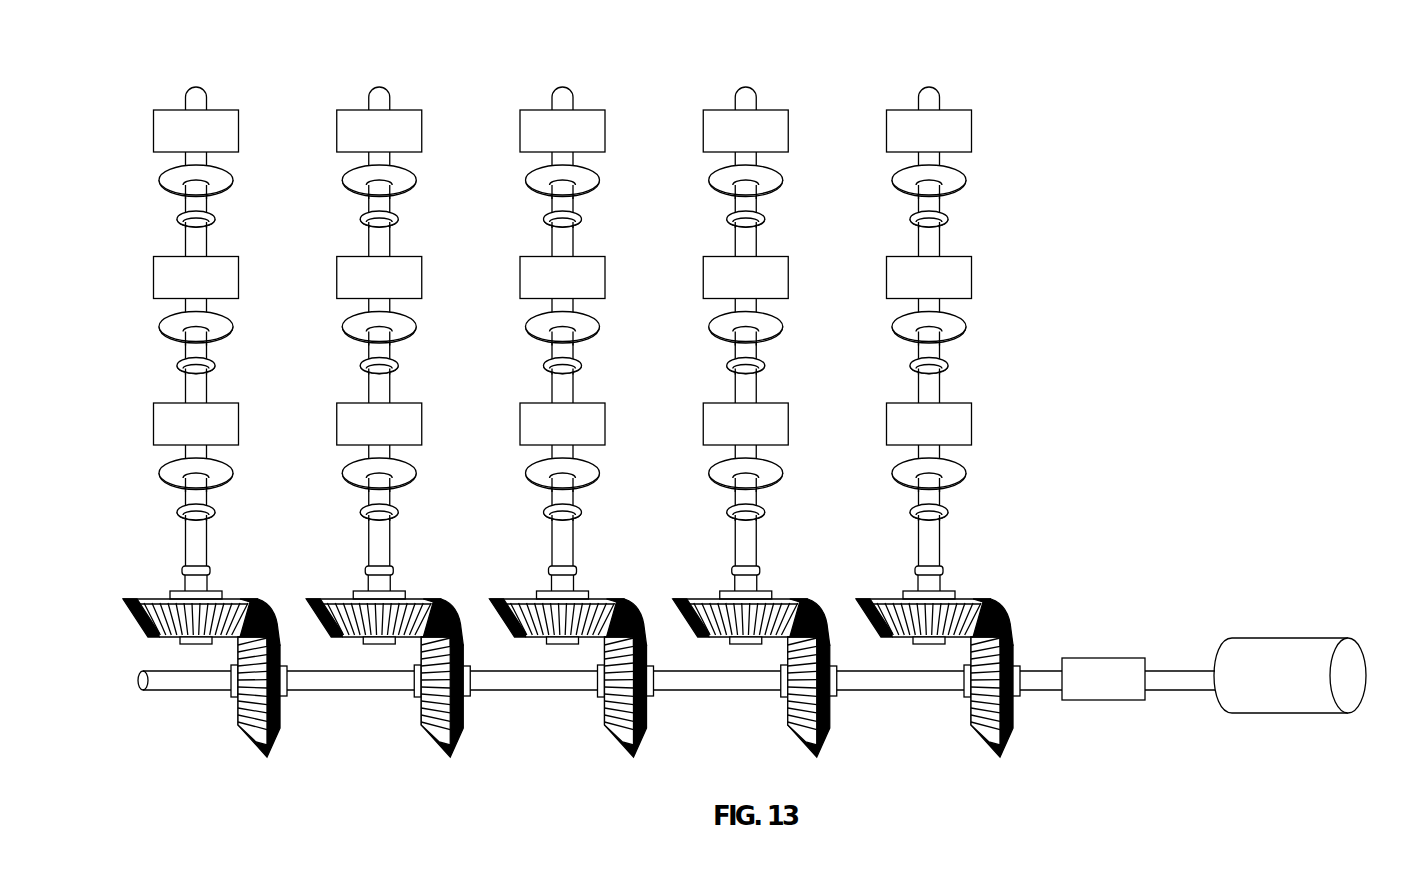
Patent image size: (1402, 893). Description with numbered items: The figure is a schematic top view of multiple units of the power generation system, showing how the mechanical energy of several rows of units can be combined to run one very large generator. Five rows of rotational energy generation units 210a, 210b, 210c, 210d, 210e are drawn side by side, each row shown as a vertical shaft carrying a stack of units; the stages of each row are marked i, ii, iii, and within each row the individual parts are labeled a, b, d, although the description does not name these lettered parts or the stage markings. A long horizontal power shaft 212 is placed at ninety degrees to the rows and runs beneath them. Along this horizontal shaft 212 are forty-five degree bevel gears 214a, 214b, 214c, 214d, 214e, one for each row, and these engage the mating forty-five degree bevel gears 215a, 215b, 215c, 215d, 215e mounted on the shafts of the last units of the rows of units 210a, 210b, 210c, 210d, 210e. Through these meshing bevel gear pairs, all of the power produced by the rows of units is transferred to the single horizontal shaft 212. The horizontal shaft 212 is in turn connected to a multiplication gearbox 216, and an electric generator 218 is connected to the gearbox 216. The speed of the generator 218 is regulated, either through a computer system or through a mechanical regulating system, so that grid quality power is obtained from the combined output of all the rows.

The rotational energy generation unit 210a is at (197, 80).
The rotational energy generation unit 210b is at (380, 80).
The rotational energy generation unit 210c is at (563, 80).
The rotational energy generation unit 210d is at (746, 80).
The rotational energy generation unit 210e is at (930, 80).
The power shaft 212 is at (877, 694).
The bevel gear 214a is at (238, 712).
The bevel gear 214b is at (421, 712).
The bevel gear 214c is at (604, 712).
The bevel gear 214d is at (788, 712).
The bevel gear 214e is at (971, 712).
The bevel gear 215a is at (182, 640).
The bevel gear 215b is at (365, 640).
The bevel gear 215c is at (548, 640).
The bevel gear 215d is at (732, 640).
The bevel gear 215e is at (915, 640).
The multiplication gearbox 216 is at (1107, 702).
The generator 218 is at (1275, 715).
The disk a is at (161, 484).
The ring b is at (158, 598).
The collar d is at (177, 220).
The first stage i is at (544, 131).
The second stage ii is at (543, 278).
The third stage iii is at (541, 424).